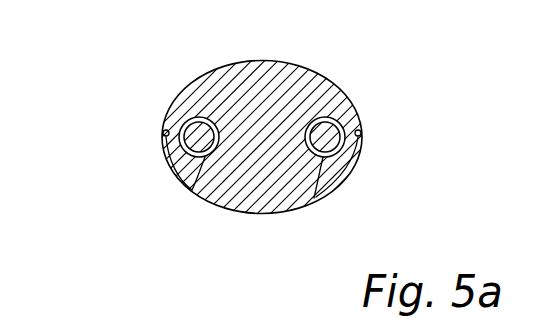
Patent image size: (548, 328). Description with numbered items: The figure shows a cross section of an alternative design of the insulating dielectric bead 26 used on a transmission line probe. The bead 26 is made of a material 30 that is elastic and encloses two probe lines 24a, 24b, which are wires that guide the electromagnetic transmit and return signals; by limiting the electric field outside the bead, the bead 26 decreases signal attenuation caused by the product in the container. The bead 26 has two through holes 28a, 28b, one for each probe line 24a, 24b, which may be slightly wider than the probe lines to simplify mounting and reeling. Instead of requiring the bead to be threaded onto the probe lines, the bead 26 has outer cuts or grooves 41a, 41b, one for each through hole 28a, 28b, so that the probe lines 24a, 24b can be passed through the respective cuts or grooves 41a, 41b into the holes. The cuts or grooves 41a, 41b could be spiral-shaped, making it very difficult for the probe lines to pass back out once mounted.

The insulating dielectric bead 26 is at (181, 97).
The probe line 24a is at (199, 135).
The probe line 24b is at (325, 133).
The cut or groove 41a is at (164, 130).
The cut or groove 41b is at (361, 132).
The material 30 is at (174, 166).
The through hole 28a is at (192, 190).
The through hole 28b is at (314, 198).